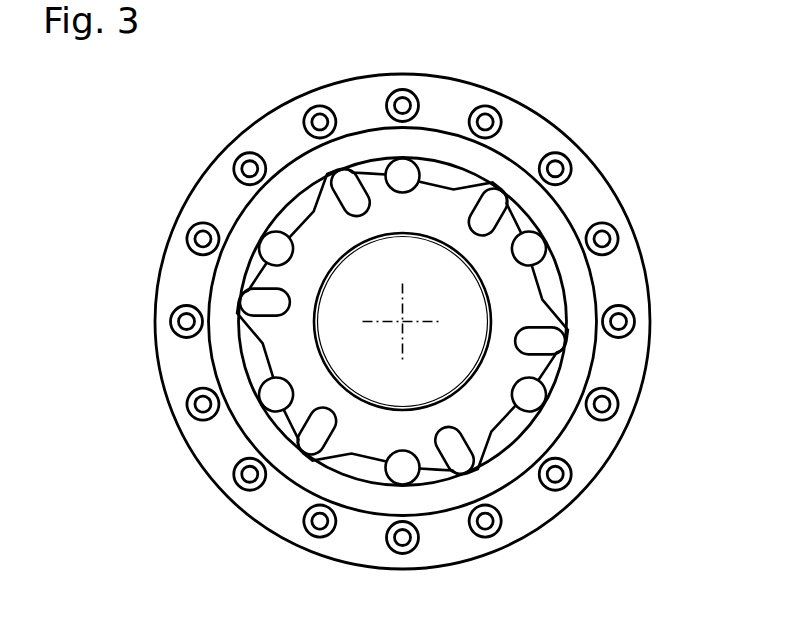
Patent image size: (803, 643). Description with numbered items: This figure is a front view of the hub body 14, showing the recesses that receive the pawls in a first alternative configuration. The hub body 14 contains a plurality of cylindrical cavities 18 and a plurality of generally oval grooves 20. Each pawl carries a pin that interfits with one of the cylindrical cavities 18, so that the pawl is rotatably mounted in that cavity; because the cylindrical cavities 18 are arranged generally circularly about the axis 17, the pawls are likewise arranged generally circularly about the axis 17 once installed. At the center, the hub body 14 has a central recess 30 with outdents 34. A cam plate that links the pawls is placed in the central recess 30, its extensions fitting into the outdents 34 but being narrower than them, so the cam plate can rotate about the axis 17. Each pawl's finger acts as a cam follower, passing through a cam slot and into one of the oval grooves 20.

The hub body 14 is at (624, 153).
The axis 17 is at (402, 322).
The cylindrical cavity 18 is at (407, 162).
The oval groove 20 is at (505, 190).
The central recess 30 is at (548, 378).
The outdent 34 is at (352, 165).